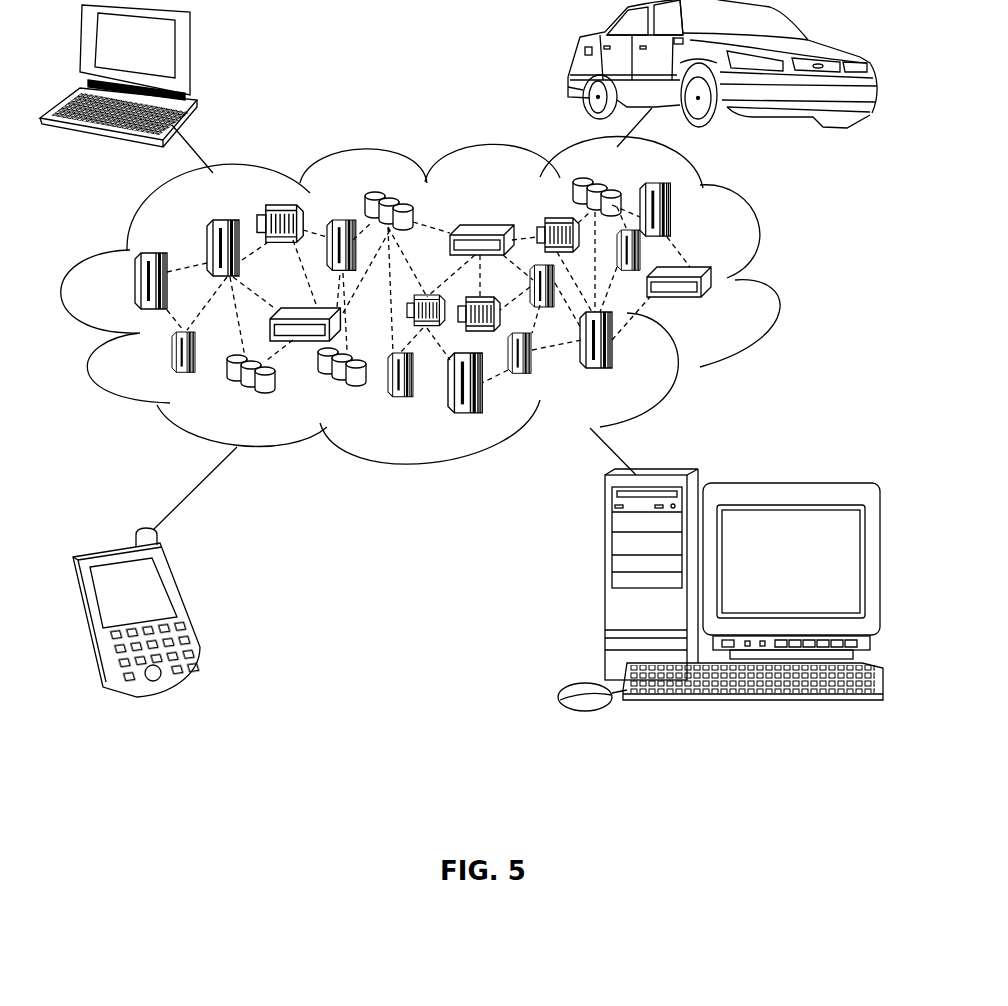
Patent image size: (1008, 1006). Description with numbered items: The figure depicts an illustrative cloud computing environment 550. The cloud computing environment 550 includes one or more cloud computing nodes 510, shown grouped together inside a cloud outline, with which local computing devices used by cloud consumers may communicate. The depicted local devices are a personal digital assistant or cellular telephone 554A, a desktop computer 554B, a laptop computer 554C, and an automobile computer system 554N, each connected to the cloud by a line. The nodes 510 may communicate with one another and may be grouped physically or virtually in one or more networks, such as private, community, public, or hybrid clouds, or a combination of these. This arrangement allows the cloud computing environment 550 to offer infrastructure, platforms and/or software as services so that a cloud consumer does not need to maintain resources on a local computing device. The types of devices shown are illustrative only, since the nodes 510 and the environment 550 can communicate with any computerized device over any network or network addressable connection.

The cloud computing environment 550 is at (757, 243).
The cloud computing nodes 510 is at (732, 303).
The personal digital assistant (PDA) or cellular telephone 554A is at (185, 600).
The desktop computer 554B is at (603, 582).
The laptop computer 554C is at (192, 48).
The automobile computer system 554N is at (575, 52).